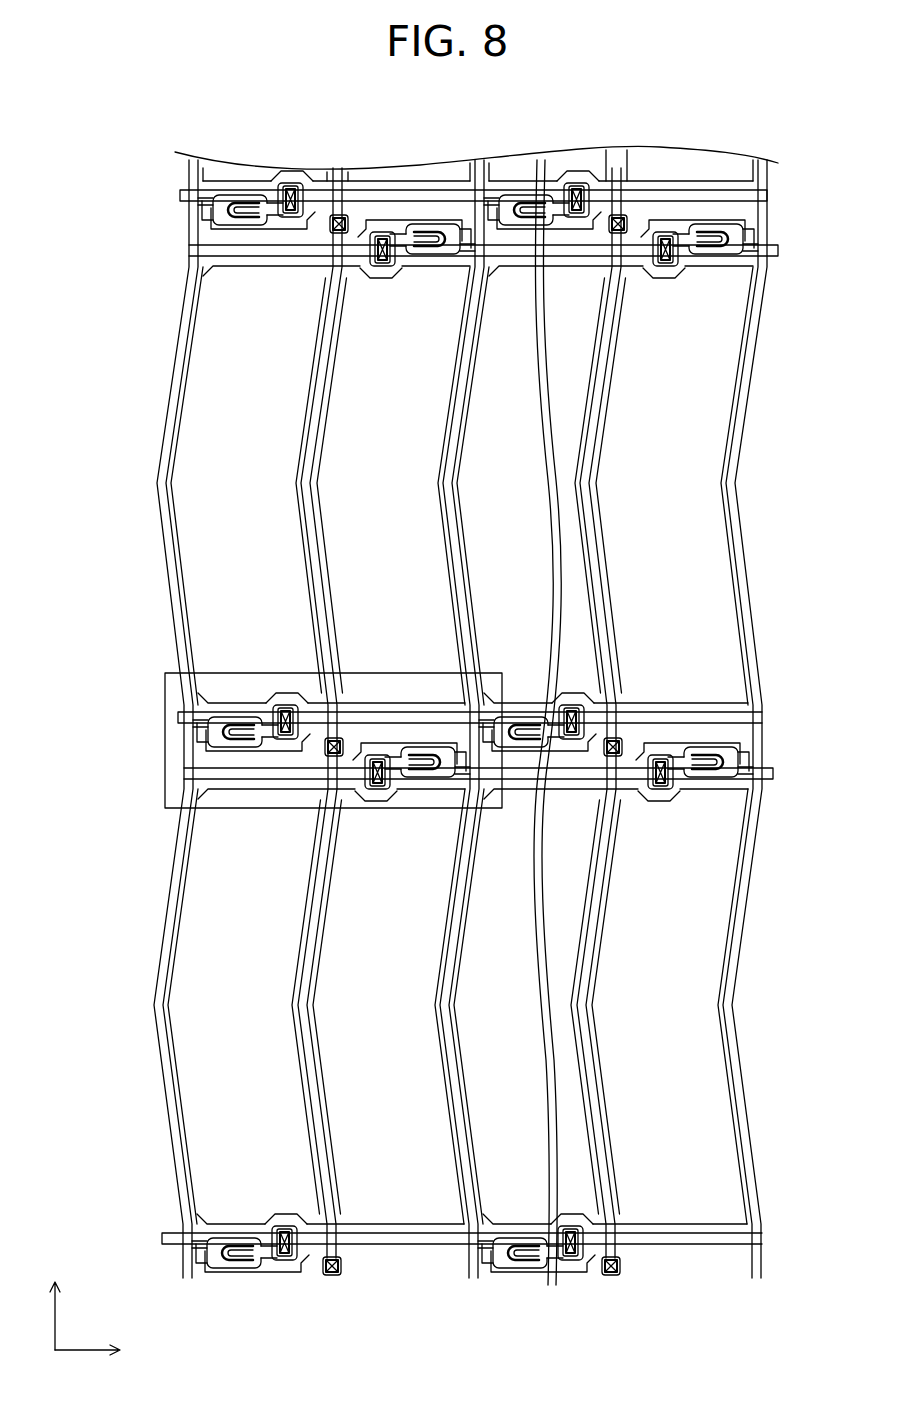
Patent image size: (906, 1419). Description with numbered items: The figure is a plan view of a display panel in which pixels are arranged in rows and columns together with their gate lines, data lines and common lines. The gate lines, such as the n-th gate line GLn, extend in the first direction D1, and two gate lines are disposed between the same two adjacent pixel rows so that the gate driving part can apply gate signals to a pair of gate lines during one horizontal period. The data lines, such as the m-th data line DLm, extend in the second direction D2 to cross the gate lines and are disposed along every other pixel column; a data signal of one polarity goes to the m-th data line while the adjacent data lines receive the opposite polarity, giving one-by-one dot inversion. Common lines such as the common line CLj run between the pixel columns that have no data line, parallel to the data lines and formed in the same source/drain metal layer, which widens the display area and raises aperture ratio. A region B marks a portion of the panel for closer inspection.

The n-th gate line GLn is at (440, 198).
The m-th data line DLm is at (189, 736).
The common line CLj is at (323, 740).
The enlarged region B is at (333, 723).
The first direction D1 is at (107, 1352).
The second direction D2 is at (53, 1298).